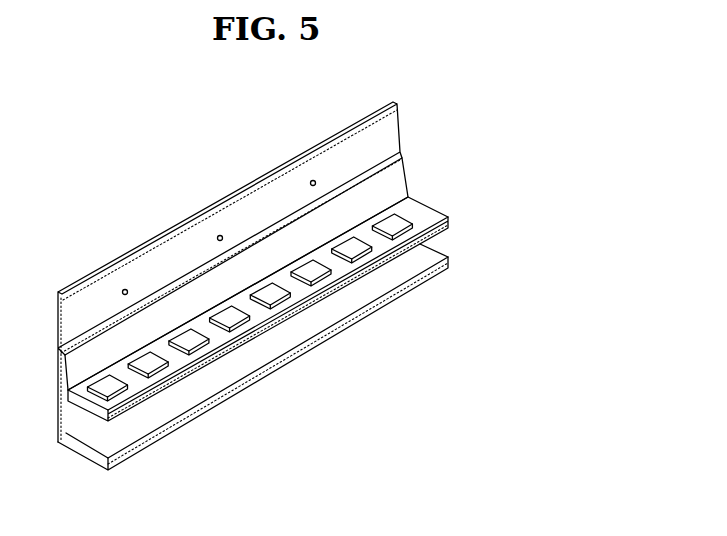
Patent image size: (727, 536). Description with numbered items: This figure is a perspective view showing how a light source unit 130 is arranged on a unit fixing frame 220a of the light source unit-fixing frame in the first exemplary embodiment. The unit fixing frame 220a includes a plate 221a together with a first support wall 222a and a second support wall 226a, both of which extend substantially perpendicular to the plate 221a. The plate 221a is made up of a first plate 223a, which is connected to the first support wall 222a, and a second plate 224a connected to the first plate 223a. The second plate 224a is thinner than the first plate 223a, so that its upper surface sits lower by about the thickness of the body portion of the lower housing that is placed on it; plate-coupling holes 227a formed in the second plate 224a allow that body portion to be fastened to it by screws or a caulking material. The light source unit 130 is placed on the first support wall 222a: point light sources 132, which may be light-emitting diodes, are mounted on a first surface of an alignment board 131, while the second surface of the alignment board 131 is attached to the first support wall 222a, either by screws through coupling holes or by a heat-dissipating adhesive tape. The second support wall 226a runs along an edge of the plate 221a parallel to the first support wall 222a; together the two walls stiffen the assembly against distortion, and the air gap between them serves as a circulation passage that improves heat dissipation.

The unit fixing frame 220a is at (304, 280).
The plate 221a is at (304, 272).
The first support wall 222a is at (253, 357).
The first plate 223a is at (397, 176).
The second plate 224a is at (274, 272).
The second support wall 226a is at (333, 312).
The plate-coupling hole 227a is at (220, 234).
The light source unit 130 is at (258, 349).
The alignment board 131 is at (173, 386).
The point light source 132 is at (257, 455).